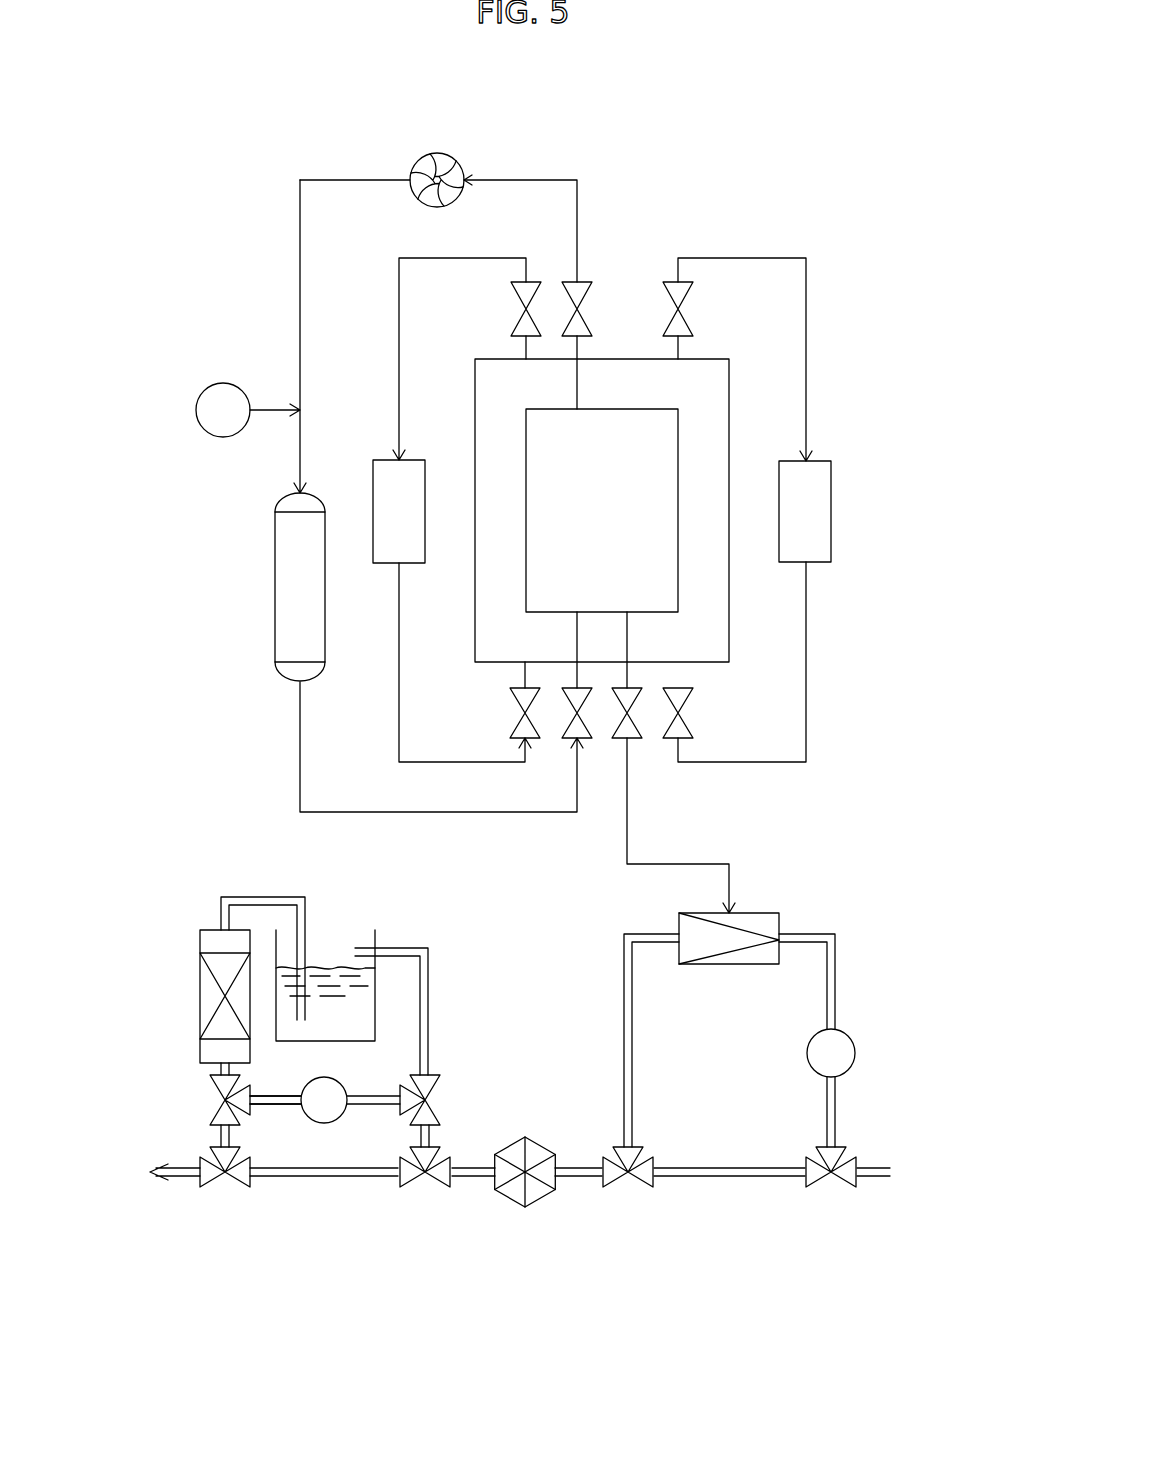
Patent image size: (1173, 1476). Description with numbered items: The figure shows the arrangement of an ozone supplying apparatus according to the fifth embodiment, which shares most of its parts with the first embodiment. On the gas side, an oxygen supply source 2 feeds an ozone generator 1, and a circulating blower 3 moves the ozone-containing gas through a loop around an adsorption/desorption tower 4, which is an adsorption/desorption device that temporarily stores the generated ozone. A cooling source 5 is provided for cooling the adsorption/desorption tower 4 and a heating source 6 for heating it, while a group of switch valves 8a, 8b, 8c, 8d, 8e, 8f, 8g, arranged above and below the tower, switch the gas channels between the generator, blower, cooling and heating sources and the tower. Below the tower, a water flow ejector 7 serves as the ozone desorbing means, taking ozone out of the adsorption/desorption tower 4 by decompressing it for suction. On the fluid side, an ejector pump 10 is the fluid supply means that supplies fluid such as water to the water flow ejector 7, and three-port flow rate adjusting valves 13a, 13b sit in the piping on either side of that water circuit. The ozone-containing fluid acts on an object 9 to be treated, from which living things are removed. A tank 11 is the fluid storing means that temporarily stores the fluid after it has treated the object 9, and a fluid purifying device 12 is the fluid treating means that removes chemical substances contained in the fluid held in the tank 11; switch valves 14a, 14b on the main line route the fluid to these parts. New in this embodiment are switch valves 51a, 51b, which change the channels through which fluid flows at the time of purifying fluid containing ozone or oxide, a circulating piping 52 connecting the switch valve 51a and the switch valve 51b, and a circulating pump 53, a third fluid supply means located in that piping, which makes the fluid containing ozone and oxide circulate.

The ozone generator 1 is at (292, 603).
The oxygen supply source 2 is at (215, 395).
The circulating blower 3 is at (437, 165).
The adsorption/desorption tower 4 is at (730, 408).
The cooling source 5 is at (388, 487).
The heating source 6 is at (820, 522).
The water flow ejector 7 is at (760, 918).
The switch valve 8a is at (527, 296).
The switch valve 8b is at (523, 733).
The switch valve 8c is at (579, 300).
The switch valve 8d is at (575, 733).
The switch valve 8e is at (682, 296).
The switch valve 8f is at (632, 733).
The switch valve 8g is at (680, 735).
The object to be treated 9 is at (521, 1198).
The ejector pump 10 is at (848, 1057).
The tank 11 is at (373, 992).
The fluid purifying device 12 is at (205, 990).
The three-port flow rate adjusting valve 13a is at (845, 1177).
The three-port flow rate adjusting valve 13b is at (642, 1177).
The switch valve 14a is at (438, 1177).
The switch valve 14b is at (240, 1177).
The switch valve 51a is at (430, 1108).
The switch valve 51b is at (213, 1112).
The circulating piping 52 is at (281, 1105).
The circulating pump 53 is at (330, 1115).